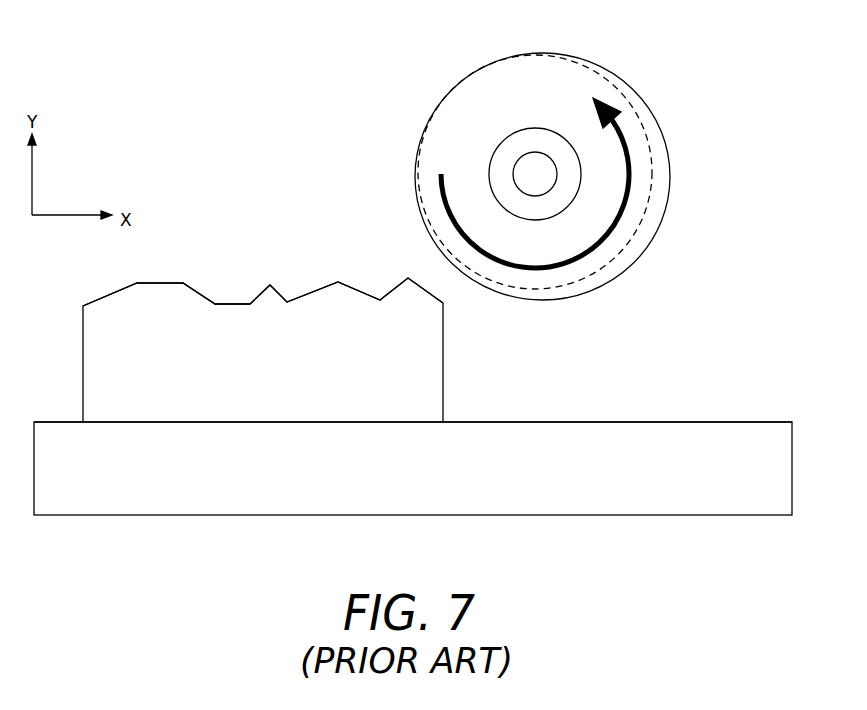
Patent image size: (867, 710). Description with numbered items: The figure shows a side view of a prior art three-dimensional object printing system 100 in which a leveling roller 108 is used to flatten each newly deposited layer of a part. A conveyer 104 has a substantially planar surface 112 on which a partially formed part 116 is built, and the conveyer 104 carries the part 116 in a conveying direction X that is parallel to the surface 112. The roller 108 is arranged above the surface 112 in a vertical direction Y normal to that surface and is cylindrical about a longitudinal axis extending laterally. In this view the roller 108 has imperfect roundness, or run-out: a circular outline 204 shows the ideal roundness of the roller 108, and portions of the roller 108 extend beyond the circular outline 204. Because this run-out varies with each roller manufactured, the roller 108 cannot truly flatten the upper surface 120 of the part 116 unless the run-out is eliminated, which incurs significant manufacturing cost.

The three-dimensional object printing system 100 is at (184, 99).
The conveyer 104 is at (228, 495).
The leveling roller 108 is at (458, 120).
The substantially planar surface 112 is at (650, 422).
The partially formed part 116 is at (443, 365).
The upper surface of the part 120 is at (198, 293).
The circular outline 204 is at (650, 140).